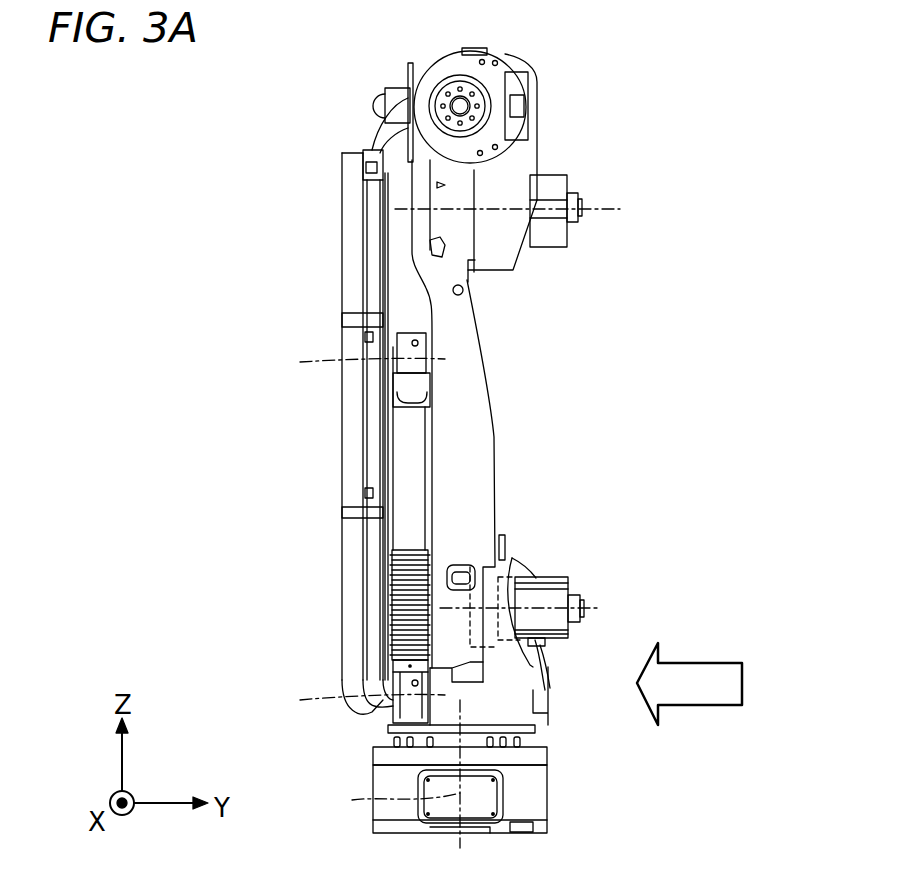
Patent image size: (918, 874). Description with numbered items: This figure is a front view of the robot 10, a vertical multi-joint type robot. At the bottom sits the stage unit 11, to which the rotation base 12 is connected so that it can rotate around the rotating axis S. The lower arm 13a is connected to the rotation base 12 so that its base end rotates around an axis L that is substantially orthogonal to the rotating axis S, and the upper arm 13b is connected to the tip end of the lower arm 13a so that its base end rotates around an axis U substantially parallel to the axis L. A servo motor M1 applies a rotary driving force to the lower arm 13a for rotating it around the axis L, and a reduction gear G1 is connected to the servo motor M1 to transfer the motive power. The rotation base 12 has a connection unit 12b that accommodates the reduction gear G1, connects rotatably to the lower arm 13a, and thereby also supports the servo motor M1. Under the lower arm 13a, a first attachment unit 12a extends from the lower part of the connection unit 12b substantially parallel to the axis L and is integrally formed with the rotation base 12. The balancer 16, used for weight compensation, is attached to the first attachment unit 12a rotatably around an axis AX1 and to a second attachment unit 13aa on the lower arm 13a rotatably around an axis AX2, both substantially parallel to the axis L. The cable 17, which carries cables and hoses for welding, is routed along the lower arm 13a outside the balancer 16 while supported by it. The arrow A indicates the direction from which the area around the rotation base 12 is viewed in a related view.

The robot 10 is at (291, 88).
The stage unit 11 is at (532, 797).
The rotation base 12 is at (545, 721).
The first attachment unit 12a is at (440, 694).
The connection unit 12b is at (525, 562).
The lower arm 13a is at (462, 322).
The second attachment unit 13aa is at (430, 372).
The upper arm 13b is at (517, 258).
The balancer 16 is at (394, 543).
The cable 17 is at (355, 267).
The axis AX1 is at (346, 697).
The axis AX2 is at (347, 360).
The reduction gear G1 is at (478, 563).
The axis L is at (594, 608).
The servo motor M1 is at (556, 580).
The rotating axis S is at (391, 800).
The axis U is at (606, 209).
The arrow A is at (700, 684).